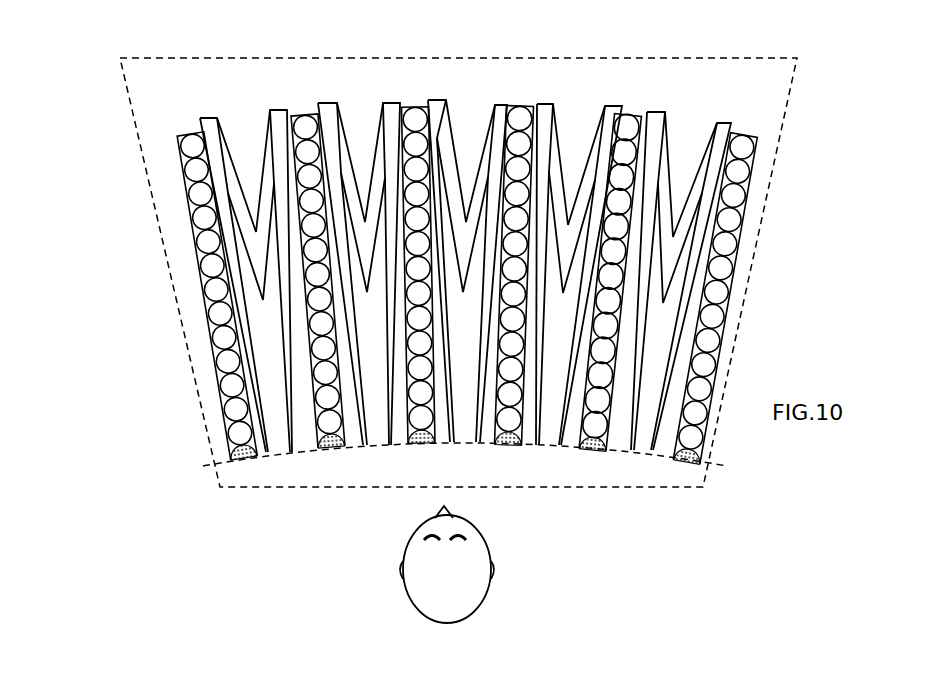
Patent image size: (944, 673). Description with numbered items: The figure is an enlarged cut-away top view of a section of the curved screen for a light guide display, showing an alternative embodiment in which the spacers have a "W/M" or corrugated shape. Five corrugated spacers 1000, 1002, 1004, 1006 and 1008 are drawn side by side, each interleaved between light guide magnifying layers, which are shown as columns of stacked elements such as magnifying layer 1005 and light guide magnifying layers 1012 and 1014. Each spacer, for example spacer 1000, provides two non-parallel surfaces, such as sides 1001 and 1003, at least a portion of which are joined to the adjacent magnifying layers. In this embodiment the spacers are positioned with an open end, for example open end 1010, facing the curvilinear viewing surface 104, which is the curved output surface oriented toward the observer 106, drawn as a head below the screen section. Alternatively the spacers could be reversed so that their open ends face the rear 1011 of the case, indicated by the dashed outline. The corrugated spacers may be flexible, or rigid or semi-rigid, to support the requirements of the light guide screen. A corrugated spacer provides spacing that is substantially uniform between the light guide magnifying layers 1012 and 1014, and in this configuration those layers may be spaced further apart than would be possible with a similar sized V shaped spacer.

The spacer 1000 is at (169, 307).
The side of spacer 1001 is at (147, 296).
The spacer 1002 is at (321, 118).
The side of spacer 1003 is at (197, 281).
The spacer 1004 is at (437, 138).
The magnifying layer 1005 is at (237, 398).
The spacer 1006 is at (607, 137).
The spacer 1008 is at (720, 134).
The open end 1010 is at (295, 443).
The rear of case 1011 is at (752, 58).
The light guide magnifying layer 1012 is at (316, 358).
The light guide magnifying layer 1014 is at (412, 380).
The curvilinear viewing surface 104 is at (628, 455).
The observer 106 is at (466, 585).